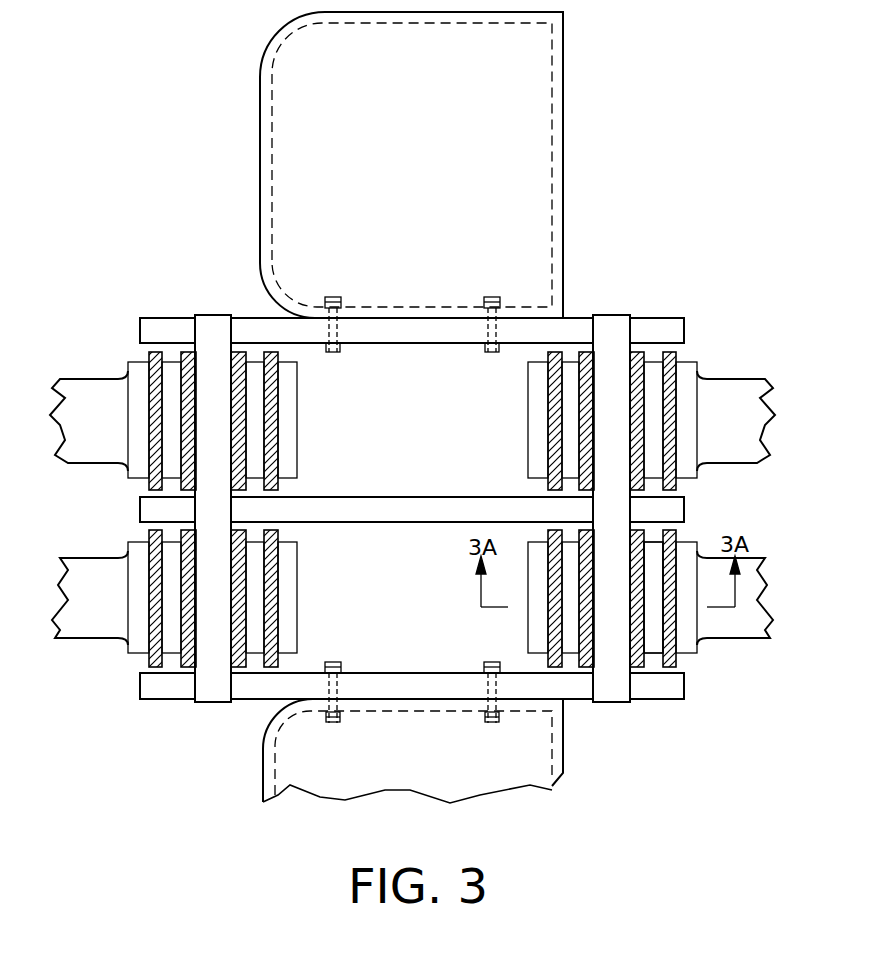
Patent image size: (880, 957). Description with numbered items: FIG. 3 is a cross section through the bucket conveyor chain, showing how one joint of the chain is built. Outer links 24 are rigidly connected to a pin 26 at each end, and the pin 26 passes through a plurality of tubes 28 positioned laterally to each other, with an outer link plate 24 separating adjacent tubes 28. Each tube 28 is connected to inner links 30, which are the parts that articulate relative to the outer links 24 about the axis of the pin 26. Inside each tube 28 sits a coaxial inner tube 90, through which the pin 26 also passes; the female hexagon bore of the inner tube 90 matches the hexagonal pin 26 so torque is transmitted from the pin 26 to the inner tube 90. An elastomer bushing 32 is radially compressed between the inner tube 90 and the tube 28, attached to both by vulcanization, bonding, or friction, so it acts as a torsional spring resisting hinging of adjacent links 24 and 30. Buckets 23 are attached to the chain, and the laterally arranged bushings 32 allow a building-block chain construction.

The bucket 23 is at (451, 442).
The outer link 24 is at (412, 486).
The pin 26 is at (416, 523).
The tube 28 is at (412, 591).
The inner link 30 is at (420, 509).
The elastomer bushing 32 is at (690, 648).
The inner tube 90 is at (420, 569).